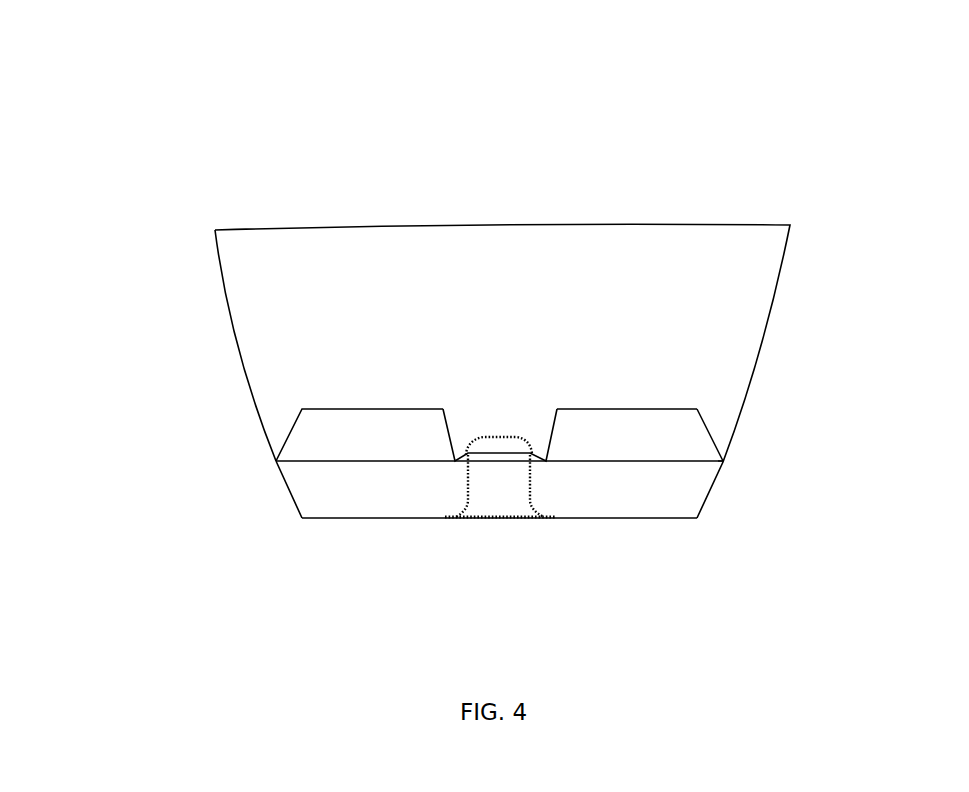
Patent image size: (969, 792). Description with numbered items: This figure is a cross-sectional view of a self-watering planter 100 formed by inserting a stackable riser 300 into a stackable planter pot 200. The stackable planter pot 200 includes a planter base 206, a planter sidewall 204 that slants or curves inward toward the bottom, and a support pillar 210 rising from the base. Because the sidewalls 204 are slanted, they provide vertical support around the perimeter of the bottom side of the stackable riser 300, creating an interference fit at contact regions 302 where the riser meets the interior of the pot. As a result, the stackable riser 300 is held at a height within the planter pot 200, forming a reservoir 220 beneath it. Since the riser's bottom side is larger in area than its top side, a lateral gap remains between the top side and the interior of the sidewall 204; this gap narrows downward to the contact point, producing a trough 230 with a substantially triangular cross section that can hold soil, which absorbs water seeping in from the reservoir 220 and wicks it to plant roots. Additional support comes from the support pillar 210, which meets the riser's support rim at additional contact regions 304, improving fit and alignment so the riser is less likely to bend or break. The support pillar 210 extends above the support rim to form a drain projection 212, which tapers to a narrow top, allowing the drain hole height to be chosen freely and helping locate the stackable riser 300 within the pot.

The self-watering planter 100 is at (248, 110).
The stackable planter pot 200 is at (222, 289).
The planter sidewall 204 is at (237, 358).
The planter base 206 is at (323, 522).
The support pillar 210 is at (499, 505).
The drain projection 212 is at (487, 440).
The reservoir 220 is at (300, 485).
The trough 230 is at (727, 422).
The stackable riser 300 is at (292, 426).
The contact regions 302 is at (732, 468).
The additional contact regions 304 is at (534, 442).